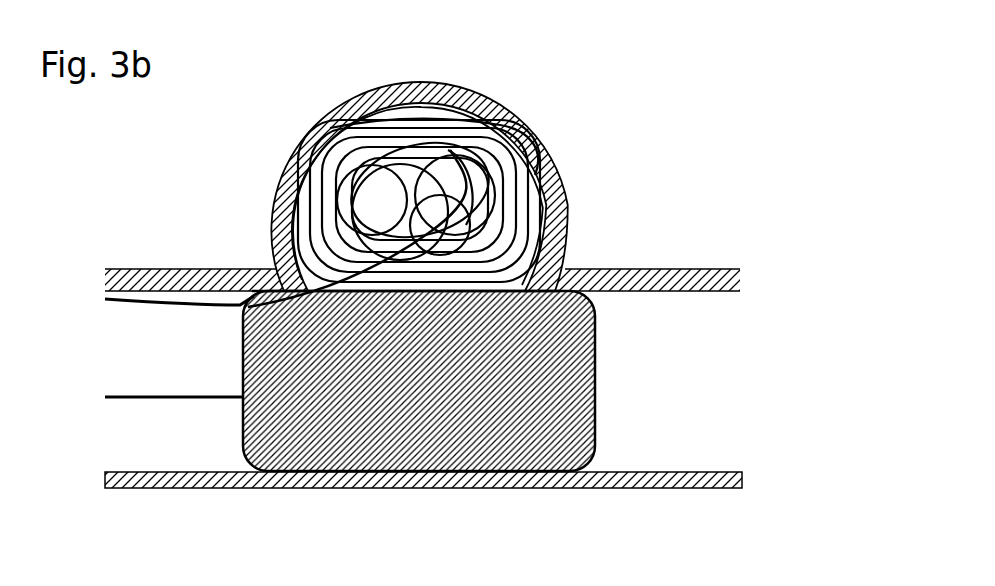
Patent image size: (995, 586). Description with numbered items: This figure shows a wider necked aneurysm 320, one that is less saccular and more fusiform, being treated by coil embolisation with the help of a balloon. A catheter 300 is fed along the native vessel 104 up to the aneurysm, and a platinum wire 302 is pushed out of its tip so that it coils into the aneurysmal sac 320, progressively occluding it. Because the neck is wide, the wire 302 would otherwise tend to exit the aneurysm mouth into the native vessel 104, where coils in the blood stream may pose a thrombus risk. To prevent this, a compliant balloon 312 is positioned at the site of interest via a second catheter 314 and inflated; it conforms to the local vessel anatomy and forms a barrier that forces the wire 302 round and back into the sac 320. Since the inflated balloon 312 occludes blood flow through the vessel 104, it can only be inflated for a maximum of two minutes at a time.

The native vessel 104 is at (133, 283).
The catheter 300 is at (194, 300).
The platinum wire 302 is at (523, 210).
The compliant balloon 312 is at (404, 391).
The second catheter 314 is at (153, 398).
The wider necked aneurysm 320 is at (302, 148).